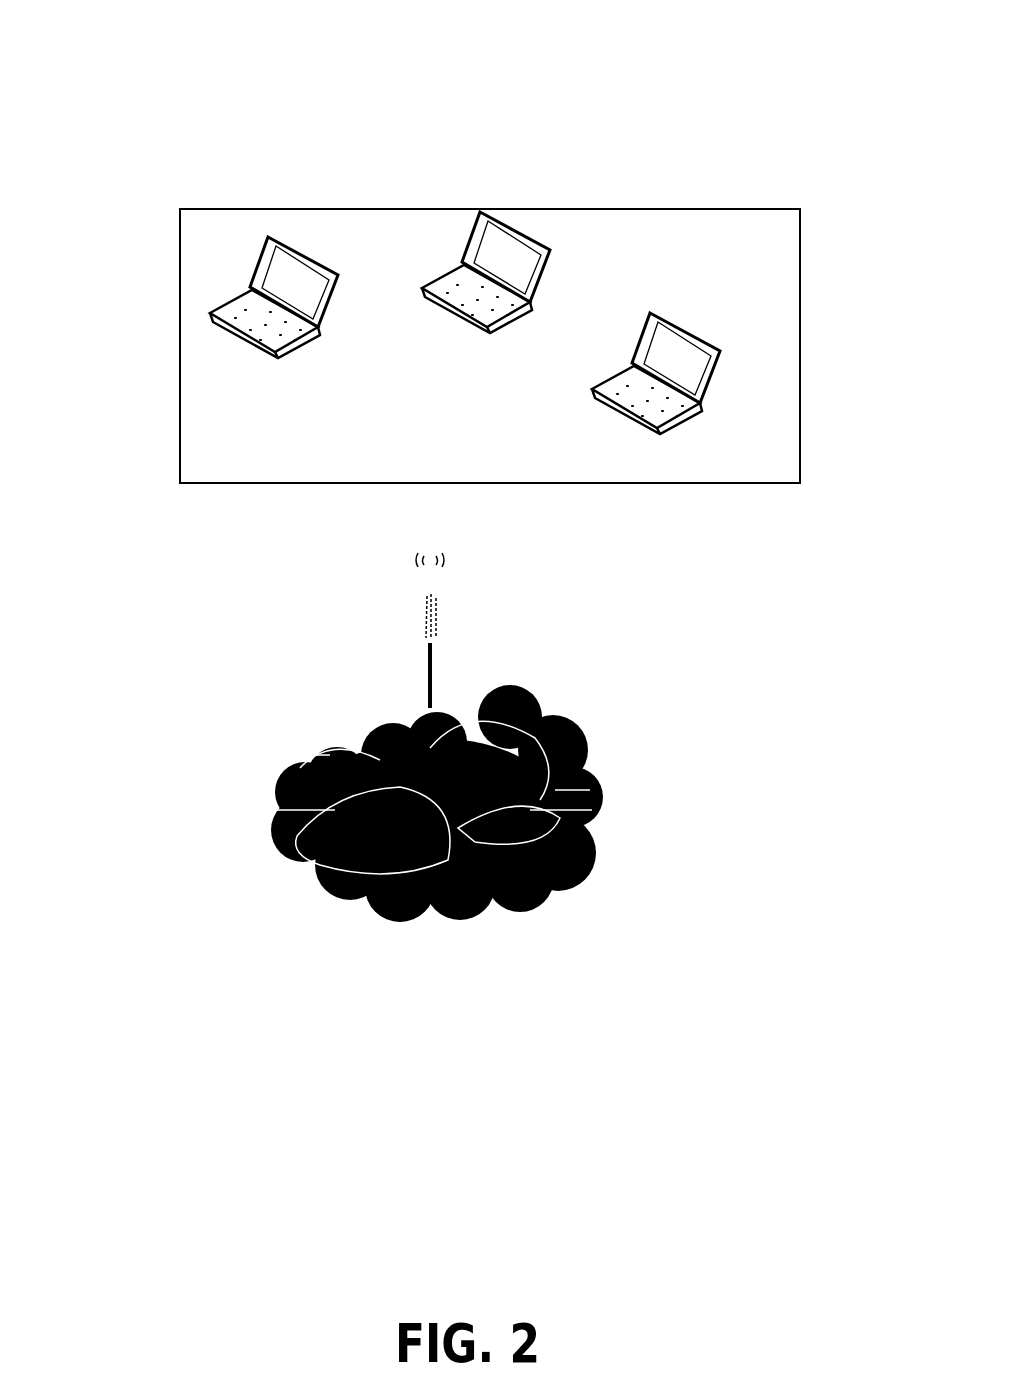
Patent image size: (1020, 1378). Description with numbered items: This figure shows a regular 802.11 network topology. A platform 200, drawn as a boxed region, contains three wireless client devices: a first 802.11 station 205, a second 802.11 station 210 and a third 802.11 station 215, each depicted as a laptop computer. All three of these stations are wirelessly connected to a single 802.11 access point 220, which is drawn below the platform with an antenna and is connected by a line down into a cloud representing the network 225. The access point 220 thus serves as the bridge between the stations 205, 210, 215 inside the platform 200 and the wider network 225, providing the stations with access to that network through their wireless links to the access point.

The platform 200 is at (492, 67).
The 802.11 station 205 is at (218, 272).
The 802.11 station 210 is at (523, 235).
The 802.11 station 215 is at (700, 327).
The 802.11 access point 220 is at (403, 587).
The network 225 is at (287, 873).